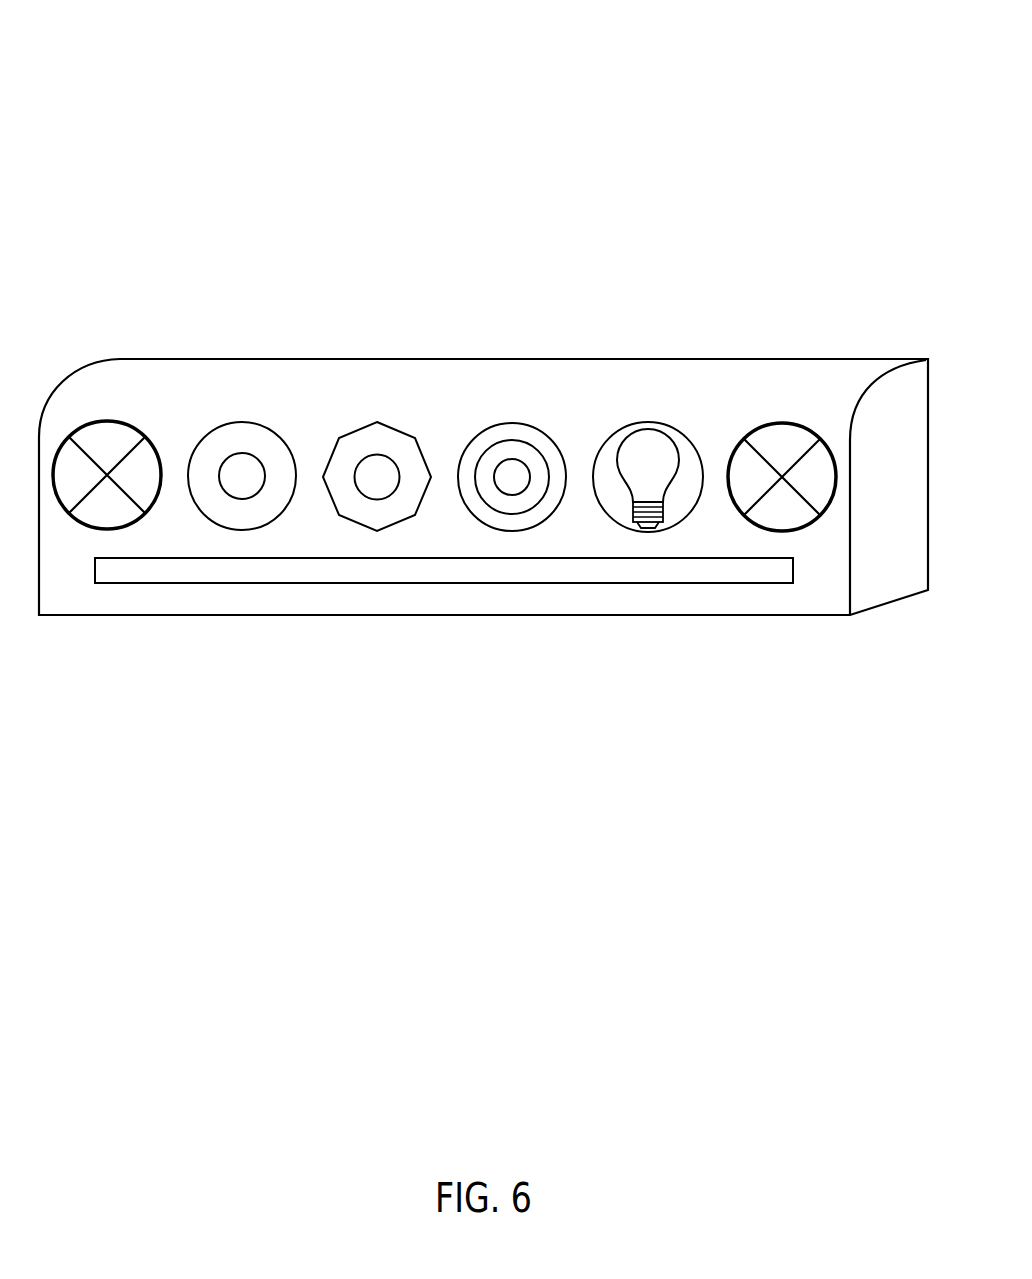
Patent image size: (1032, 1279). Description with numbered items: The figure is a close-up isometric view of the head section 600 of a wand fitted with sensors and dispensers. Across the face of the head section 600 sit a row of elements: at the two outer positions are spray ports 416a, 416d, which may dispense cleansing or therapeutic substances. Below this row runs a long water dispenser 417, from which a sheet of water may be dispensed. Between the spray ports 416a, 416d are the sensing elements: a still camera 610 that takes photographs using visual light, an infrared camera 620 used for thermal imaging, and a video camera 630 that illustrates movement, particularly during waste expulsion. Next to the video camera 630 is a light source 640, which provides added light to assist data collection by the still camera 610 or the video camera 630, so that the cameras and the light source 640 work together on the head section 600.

The head section 600 is at (120, 65).
The still camera 610 is at (230, 438).
The infrared camera 620 is at (380, 452).
The video camera 630 is at (538, 442).
The light source 640 is at (692, 440).
The spray port 416a is at (92, 523).
The spray port 416d is at (807, 527).
The water dispenser 417 is at (410, 570).